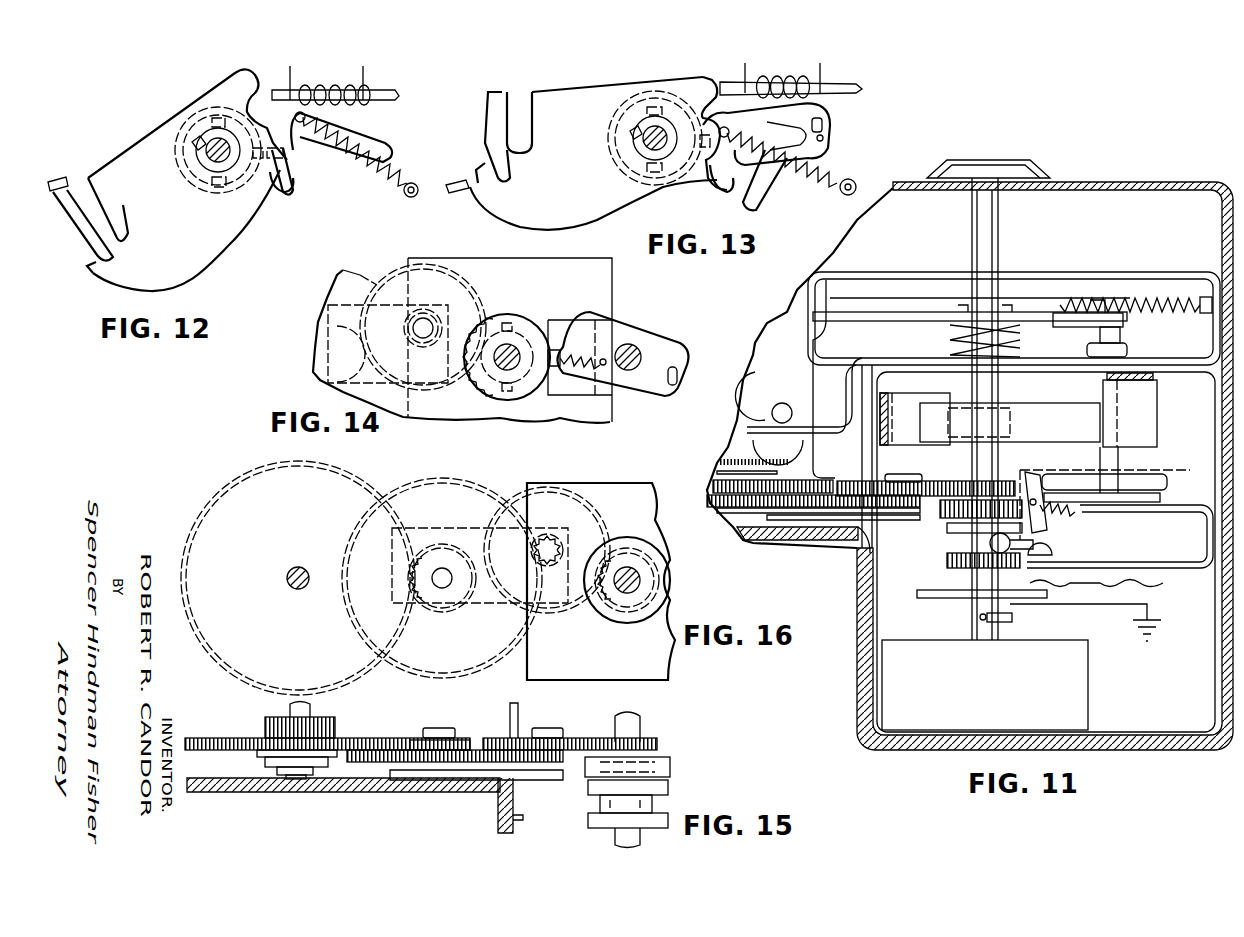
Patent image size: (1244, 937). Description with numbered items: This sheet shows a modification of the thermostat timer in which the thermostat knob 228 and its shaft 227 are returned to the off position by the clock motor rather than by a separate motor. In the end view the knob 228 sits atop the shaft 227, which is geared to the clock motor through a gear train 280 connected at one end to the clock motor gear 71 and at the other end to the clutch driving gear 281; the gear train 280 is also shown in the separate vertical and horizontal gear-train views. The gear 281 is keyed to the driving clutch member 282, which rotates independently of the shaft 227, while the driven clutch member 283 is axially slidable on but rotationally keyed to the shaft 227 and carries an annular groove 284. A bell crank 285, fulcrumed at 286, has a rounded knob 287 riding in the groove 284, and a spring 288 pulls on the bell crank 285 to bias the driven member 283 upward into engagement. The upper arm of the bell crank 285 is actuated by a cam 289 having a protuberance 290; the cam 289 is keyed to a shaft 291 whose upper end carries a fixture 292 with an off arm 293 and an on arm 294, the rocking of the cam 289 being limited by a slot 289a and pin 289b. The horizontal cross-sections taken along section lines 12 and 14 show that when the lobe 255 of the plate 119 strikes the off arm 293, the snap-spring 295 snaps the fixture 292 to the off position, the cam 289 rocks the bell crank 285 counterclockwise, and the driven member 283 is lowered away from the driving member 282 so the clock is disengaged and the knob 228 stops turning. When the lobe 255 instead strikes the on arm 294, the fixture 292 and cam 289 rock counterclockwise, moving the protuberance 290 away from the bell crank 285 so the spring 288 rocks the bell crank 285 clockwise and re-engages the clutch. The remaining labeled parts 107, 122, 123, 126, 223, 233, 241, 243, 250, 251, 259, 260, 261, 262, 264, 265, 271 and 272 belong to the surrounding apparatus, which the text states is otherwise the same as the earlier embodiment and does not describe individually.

In FIG. 11, the section line 12 is at (848, 311).
In FIG. 11, the section line 14 is at (1192, 483).
In FIG. 16, the clock motor gear 71 is at (247, 487).
In FIG. 15, the clock motor gear 71 is at (212, 745).
In FIG. 12, the camera body casting 107 is at (50, 179).
In FIG. 13, the camera body casting 107 is at (455, 193).
In FIG. 11, the camera body casting 107 is at (813, 370).
In FIG. 12, the plate 119 is at (220, 242).
In FIG. 13, the plate 119 is at (597, 217).
In FIG. 12, the plate arm 122 is at (65, 205).
In FIG. 13, the plate arm 122 is at (496, 95).
In FIG. 12, the plate hook end 123 is at (90, 274).
In FIG. 13, the plate hook end 123 is at (480, 165).
In FIG. 11, the compression spring 126 is at (950, 340).
In FIG. 11, the motor housing block 223 is at (985, 685).
In FIG. 12, the shaft 227 is at (200, 167).
In FIG. 13, the shaft 227 is at (655, 138).
In FIG. 14, the shaft 227 is at (510, 348).
In FIG. 16, the shaft 227 is at (637, 580).
In FIG. 15, the shaft 227 is at (630, 716).
In FIG. 11, the shaft 227 is at (998, 243).
In FIG. 11, the thermostat knob 228 is at (1018, 151).
In FIG. 11, the support block 233 is at (1106, 410).
In FIG. 11, the bearing block 241 is at (916, 393).
In FIG. 11, the cross bar 243 is at (1022, 410).
In FIG. 12, the return spring 250 is at (220, 190).
In FIG. 13, the return spring 250 is at (645, 160).
In FIG. 11, the return spring 250 is at (1005, 312).
In FIG. 12, the slide bar 251 is at (197, 153).
In FIG. 13, the slide bar 251 is at (633, 133).
In FIG. 11, the slide bar 251 is at (960, 313).
In FIG. 12, the lobe 255 is at (318, 164).
In FIG. 13, the lobe 255 is at (722, 190).
In FIG. 13, the stop 259 is at (707, 82).
In FIG. 12, the coil spring 260 is at (293, 87).
In FIG. 13, the coil spring 260 is at (755, 82).
In FIG. 12, the spring bar 261 is at (367, 84).
In FIG. 13, the spring bar 261 is at (824, 84).
In FIG. 11, the contact plate 262 is at (950, 599).
In FIG. 11, the contact spring 264 is at (1040, 585).
In FIG. 11, the ground lead 265 is at (1074, 605).
In FIG. 11, the switch contact 271 is at (985, 620).
In FIG. 11, the switch block 272 is at (1012, 617).
In FIG. 16, the gear train 280 is at (437, 477).
In FIG. 15, the gear train 280 is at (493, 728).
In FIG. 15, the clutch driving gear 281 is at (656, 743).
In FIG. 11, the clutch driving gear 281 is at (963, 480).
In FIG. 15, the driving clutch member 282 is at (670, 764).
In FIG. 11, the driving clutch member 282 is at (981, 516).
In FIG. 15, the driven clutch member 283 is at (668, 788).
In FIG. 11, the driven clutch member 283 is at (950, 562).
In FIG. 15, the annular groove 284 is at (602, 805).
In FIG. 11, the bell crank 285 is at (1050, 515).
In FIG. 11, the fulcrum 286 is at (1052, 546).
In FIG. 11, the rounded knob 287 is at (990, 543).
In FIG. 11, the spring 288 is at (1078, 517).
In FIG. 14, the cam 289 is at (615, 332).
In FIG. 11, the cam 289 is at (1145, 470).
In FIG. 13, the slot 289a is at (832, 131).
In FIG. 13, the pin 289b is at (827, 151).
In FIG. 11, the pin 289b is at (1162, 497).
In FIG. 14, the protuberance 290 is at (562, 365).
In FIG. 14, the shaft 291 is at (630, 355).
In FIG. 11, the shaft 291 is at (1100, 458).
In FIG. 13, the fixture 292 is at (823, 114).
In FIG. 11, the fixture 292 is at (1125, 322).
In FIG. 12, the off arm 293 is at (320, 124).
In FIG. 13, the off arm 293 is at (724, 128).
In FIG. 12, the on arm 294 is at (288, 194).
In FIG. 13, the on arm 294 is at (757, 208).
In FIG. 12, the snap-spring 295 is at (408, 178).
In FIG. 11, the snap-spring 295 is at (1187, 327).